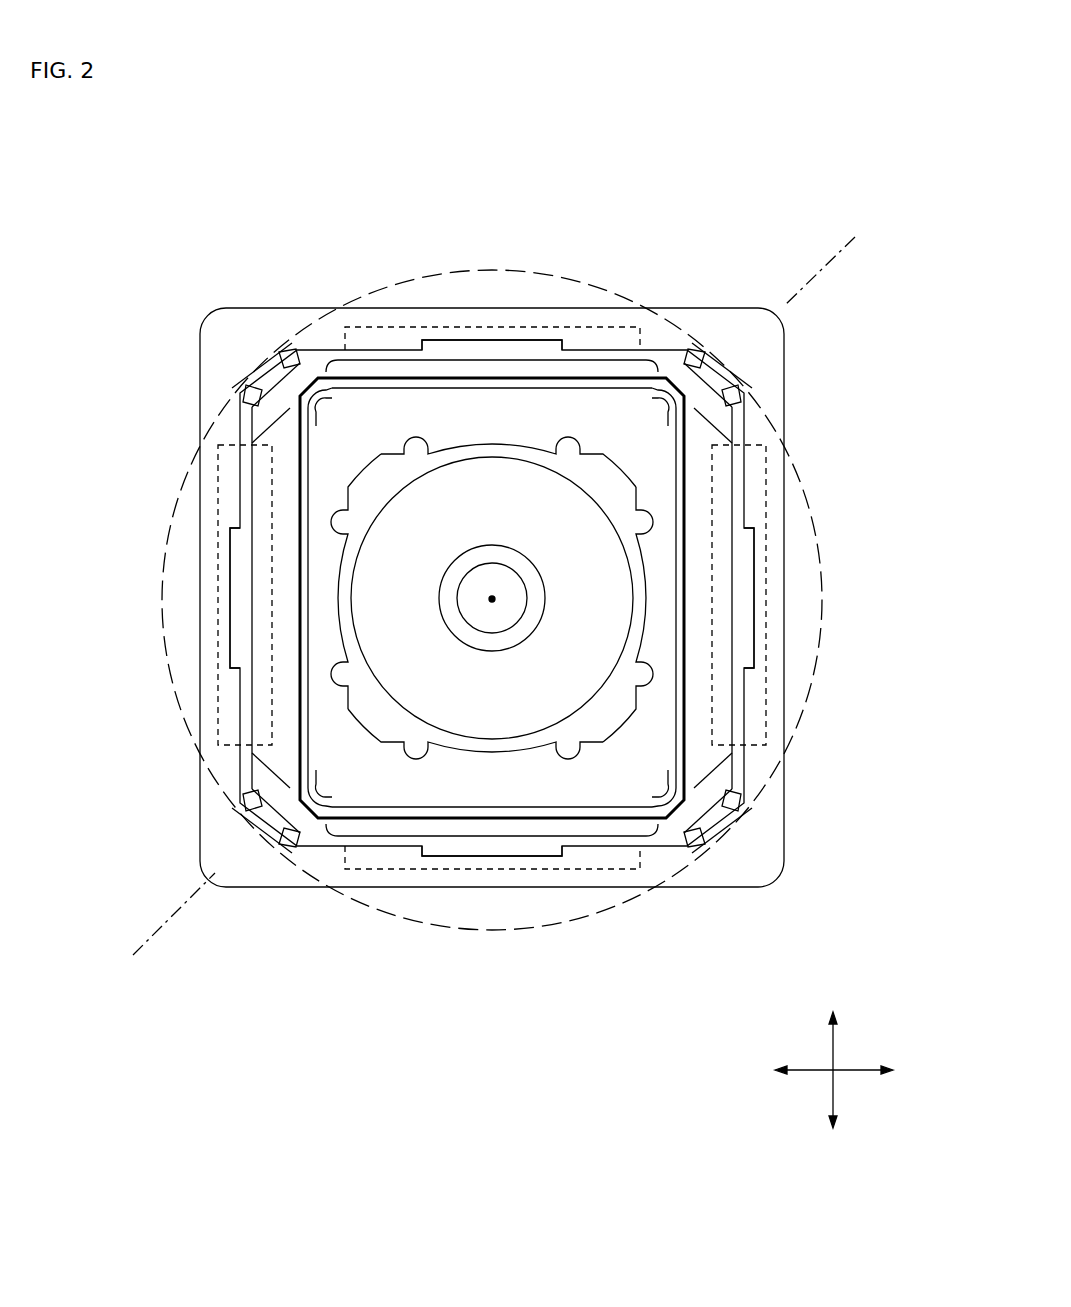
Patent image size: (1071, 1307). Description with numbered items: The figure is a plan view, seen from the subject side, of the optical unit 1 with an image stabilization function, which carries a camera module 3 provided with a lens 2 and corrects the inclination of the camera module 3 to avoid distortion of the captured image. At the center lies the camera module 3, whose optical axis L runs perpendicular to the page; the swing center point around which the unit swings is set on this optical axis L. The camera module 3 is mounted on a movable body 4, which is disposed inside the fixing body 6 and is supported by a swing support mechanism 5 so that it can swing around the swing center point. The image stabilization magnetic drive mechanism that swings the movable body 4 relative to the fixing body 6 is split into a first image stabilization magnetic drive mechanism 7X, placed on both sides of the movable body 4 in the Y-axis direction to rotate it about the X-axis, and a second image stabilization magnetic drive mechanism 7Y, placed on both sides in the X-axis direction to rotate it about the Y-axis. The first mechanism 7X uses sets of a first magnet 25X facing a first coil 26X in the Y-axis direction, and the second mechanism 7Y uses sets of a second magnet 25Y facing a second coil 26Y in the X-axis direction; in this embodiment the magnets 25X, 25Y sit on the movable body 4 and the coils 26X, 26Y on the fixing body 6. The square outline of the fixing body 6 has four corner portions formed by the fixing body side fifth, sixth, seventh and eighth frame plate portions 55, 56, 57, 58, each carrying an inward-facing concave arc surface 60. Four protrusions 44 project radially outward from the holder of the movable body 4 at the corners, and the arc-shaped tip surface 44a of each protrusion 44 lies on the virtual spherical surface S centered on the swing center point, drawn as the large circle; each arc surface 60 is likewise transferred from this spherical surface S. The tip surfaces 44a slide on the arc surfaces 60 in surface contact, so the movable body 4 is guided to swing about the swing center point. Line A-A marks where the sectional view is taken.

The optical unit with an image stabilization function 1 is at (300, 203).
The lens 2 is at (508, 612).
The camera module 3 is at (494, 689).
The movable body 4 is at (597, 790).
The swing support mechanism 5 is at (237, 380).
The fixing body 6 is at (536, 599).
The first image stabilization magnetic drive mechanism 7X is at (448, 226).
The second image stabilization magnetic drive mechanism 7Y is at (120, 692).
The first magnet 25X is at (372, 370).
The first coil 26X is at (394, 343).
The second magnet 25Y is at (228, 668).
The second coil 26Y is at (262, 672).
The protrusion 44 is at (297, 340).
The tip surface 44a is at (283, 368).
The fixing body side fifth frame plate portion 55 is at (752, 875).
The fixing body side sixth frame plate portion 56 is at (230, 328).
The fixing body side seventh frame plate portion 57 is at (753, 323).
The fixing body side eighth frame plate portion 58 is at (230, 875).
The arc surface 60 is at (268, 366).
The virtual spherical surface S is at (565, 278).
The optical axis L is at (495, 599).
The line A- A is at (855, 237).